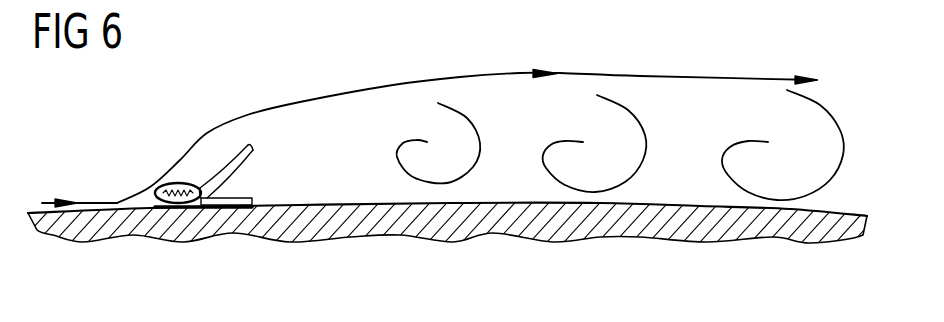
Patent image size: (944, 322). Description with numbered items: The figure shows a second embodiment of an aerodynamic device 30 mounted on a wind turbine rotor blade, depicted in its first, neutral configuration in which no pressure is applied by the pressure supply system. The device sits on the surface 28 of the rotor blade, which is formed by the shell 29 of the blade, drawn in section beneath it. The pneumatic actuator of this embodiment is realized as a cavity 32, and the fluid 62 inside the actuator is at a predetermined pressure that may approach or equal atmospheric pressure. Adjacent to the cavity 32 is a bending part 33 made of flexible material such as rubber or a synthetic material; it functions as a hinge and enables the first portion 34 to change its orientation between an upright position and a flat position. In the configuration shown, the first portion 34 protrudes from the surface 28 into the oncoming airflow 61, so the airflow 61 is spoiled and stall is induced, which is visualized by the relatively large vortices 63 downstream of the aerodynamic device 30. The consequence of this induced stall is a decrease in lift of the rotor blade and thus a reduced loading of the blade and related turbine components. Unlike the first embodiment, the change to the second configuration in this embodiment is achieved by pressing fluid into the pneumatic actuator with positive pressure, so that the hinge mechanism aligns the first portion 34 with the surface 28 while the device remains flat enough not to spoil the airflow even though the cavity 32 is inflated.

The surface of the rotor blade 28 is at (663, 192).
The shell of the rotor blade 29 is at (490, 225).
The aerodynamic device 30 is at (234, 178).
The cavity 32 is at (181, 208).
The bending part 33 is at (201, 190).
The first portion 34 is at (257, 150).
The airflow 61 is at (500, 73).
The fluid 62 is at (158, 184).
The vortices 63 is at (475, 127).